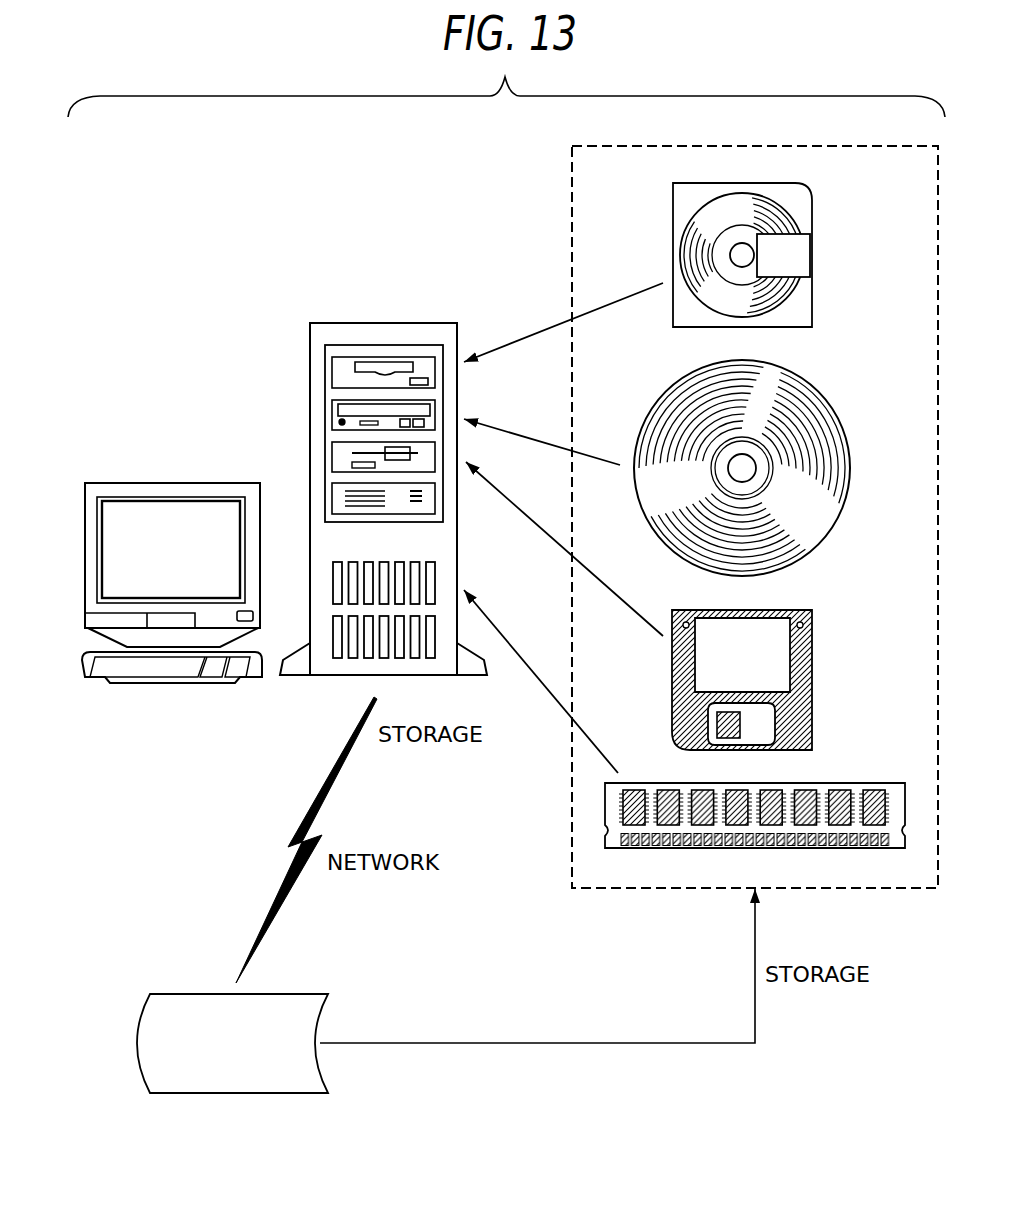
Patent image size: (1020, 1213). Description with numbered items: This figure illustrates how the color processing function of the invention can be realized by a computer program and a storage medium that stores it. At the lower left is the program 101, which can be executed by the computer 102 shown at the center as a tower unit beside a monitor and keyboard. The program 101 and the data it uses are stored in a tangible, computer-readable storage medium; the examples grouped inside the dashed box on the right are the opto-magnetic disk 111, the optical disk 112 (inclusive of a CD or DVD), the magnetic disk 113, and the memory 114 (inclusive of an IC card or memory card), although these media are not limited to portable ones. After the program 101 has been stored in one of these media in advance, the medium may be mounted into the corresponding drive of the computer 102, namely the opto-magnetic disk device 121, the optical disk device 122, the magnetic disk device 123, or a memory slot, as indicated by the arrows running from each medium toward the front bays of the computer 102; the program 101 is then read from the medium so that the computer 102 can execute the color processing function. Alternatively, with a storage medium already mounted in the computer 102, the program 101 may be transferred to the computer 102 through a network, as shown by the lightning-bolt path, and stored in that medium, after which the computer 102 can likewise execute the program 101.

The program 101 is at (135, 1047).
The computer 102 is at (383, 323).
The opto-magnetic disk 111 is at (815, 218).
The optical disk 112 is at (851, 468).
The magnetic disk 113 is at (814, 680).
The memory 114 is at (843, 783).
The opto-magnetic disk device 121 is at (333, 372).
The optical disk device 122 is at (333, 414).
The magnetic disk device 123 is at (333, 456).